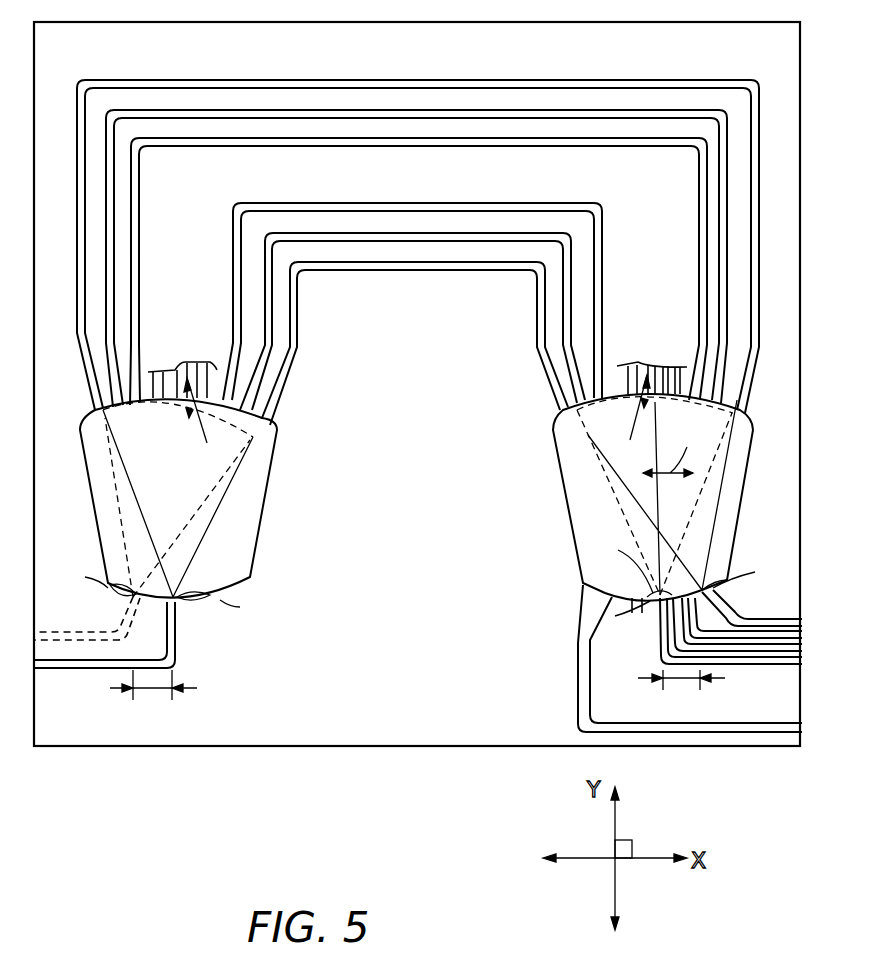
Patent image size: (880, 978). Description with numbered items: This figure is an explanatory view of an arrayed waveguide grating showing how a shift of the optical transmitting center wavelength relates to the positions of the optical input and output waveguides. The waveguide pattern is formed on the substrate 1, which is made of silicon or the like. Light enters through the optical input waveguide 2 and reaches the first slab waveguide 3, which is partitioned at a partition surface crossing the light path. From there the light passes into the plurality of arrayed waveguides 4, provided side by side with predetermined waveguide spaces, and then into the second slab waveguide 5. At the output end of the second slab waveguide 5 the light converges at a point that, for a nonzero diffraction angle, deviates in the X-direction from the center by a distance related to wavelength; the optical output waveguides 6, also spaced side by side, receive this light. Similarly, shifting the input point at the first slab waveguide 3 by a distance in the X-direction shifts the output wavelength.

The substrate 1 is at (783, 228).
The optical input waveguide 2 is at (47, 625).
The first slab waveguide 3 is at (103, 488).
The arrayed waveguides 4 is at (107, 180).
The second slab waveguide 5 is at (737, 465).
The optical output waveguides 6 is at (775, 612).